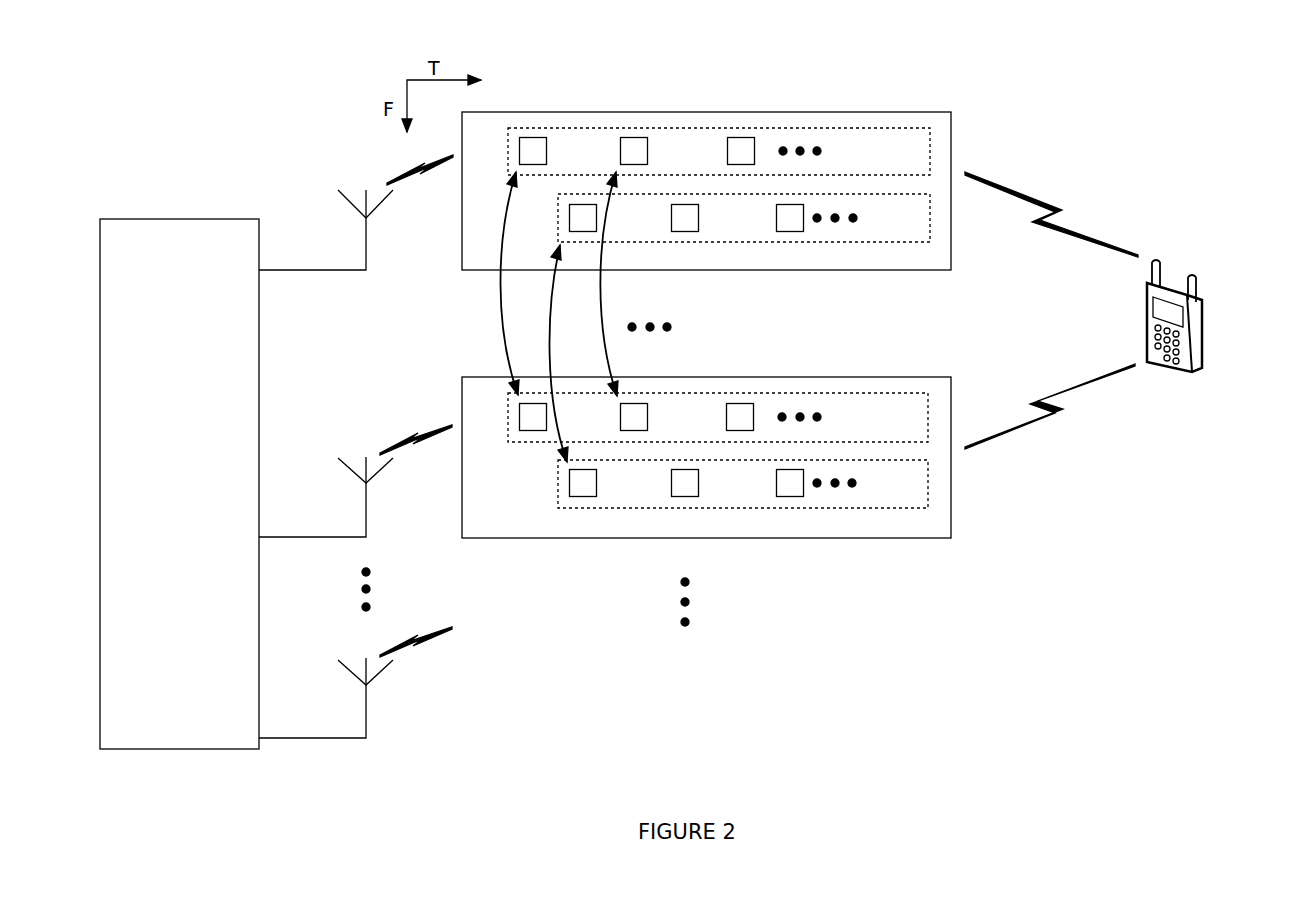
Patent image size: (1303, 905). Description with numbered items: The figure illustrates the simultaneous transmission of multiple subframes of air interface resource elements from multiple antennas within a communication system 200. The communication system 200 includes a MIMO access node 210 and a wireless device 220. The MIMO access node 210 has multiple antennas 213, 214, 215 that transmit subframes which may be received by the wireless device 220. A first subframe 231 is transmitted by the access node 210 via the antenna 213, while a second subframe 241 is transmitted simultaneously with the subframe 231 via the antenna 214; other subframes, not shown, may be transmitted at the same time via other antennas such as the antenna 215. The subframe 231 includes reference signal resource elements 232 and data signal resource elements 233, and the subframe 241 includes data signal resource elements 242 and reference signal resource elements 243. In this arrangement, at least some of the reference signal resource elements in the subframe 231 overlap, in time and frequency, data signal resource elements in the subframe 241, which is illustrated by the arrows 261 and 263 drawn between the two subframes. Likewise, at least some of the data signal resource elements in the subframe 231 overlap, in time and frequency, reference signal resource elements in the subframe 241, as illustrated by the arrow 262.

The communication system 200 is at (1204, 97).
The MIMO access node 210 is at (160, 536).
The antenna 213 is at (336, 178).
The antenna 214 is at (336, 444).
The antenna 215 is at (336, 648).
The wireless device 220 is at (1200, 320).
The subframe 231 is at (918, 112).
The reference signal resource elements 232 is at (920, 162).
The data signal resource elements 233 is at (920, 229).
The subframe 241 is at (918, 377).
The data signal resource elements 242 is at (920, 428).
The reference signal resource elements 243 is at (920, 494).
The arrow 261 is at (498, 290).
The arrow 262 is at (551, 332).
The arrow 263 is at (601, 293).